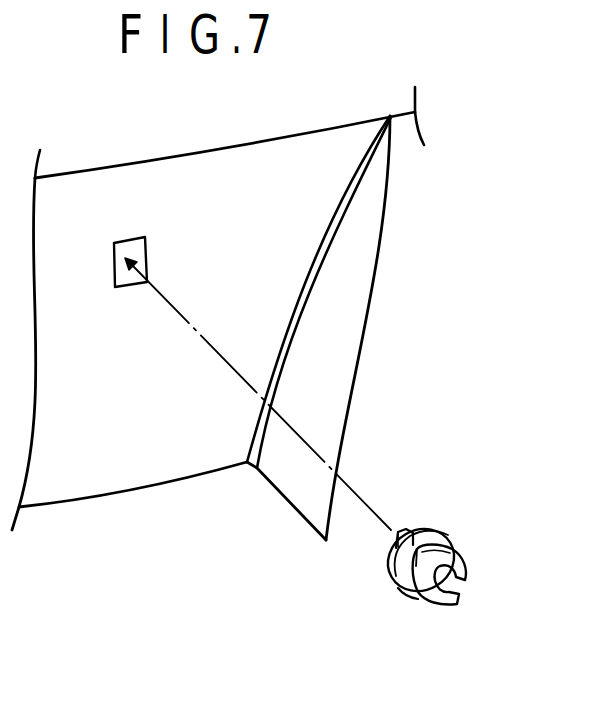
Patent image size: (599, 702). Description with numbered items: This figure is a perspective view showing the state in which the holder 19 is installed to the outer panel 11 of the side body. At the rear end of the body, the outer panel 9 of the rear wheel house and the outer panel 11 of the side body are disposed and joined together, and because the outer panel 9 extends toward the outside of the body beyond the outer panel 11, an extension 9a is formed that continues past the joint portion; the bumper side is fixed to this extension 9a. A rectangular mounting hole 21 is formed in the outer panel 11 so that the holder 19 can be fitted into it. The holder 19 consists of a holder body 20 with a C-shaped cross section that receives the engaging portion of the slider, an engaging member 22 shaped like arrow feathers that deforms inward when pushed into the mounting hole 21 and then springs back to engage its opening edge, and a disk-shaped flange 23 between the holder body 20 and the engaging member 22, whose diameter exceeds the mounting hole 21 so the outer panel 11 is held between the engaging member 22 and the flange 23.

The outer panel of rear wheel house 9 is at (365, 216).
The extension 9a is at (332, 413).
The outer panel of side body 11 is at (216, 197).
The holder 19 is at (435, 576).
The holder body 20 is at (460, 597).
The mounting hole 21 is at (128, 247).
The engaging member 22 is at (388, 546).
The flange 23 is at (412, 593).